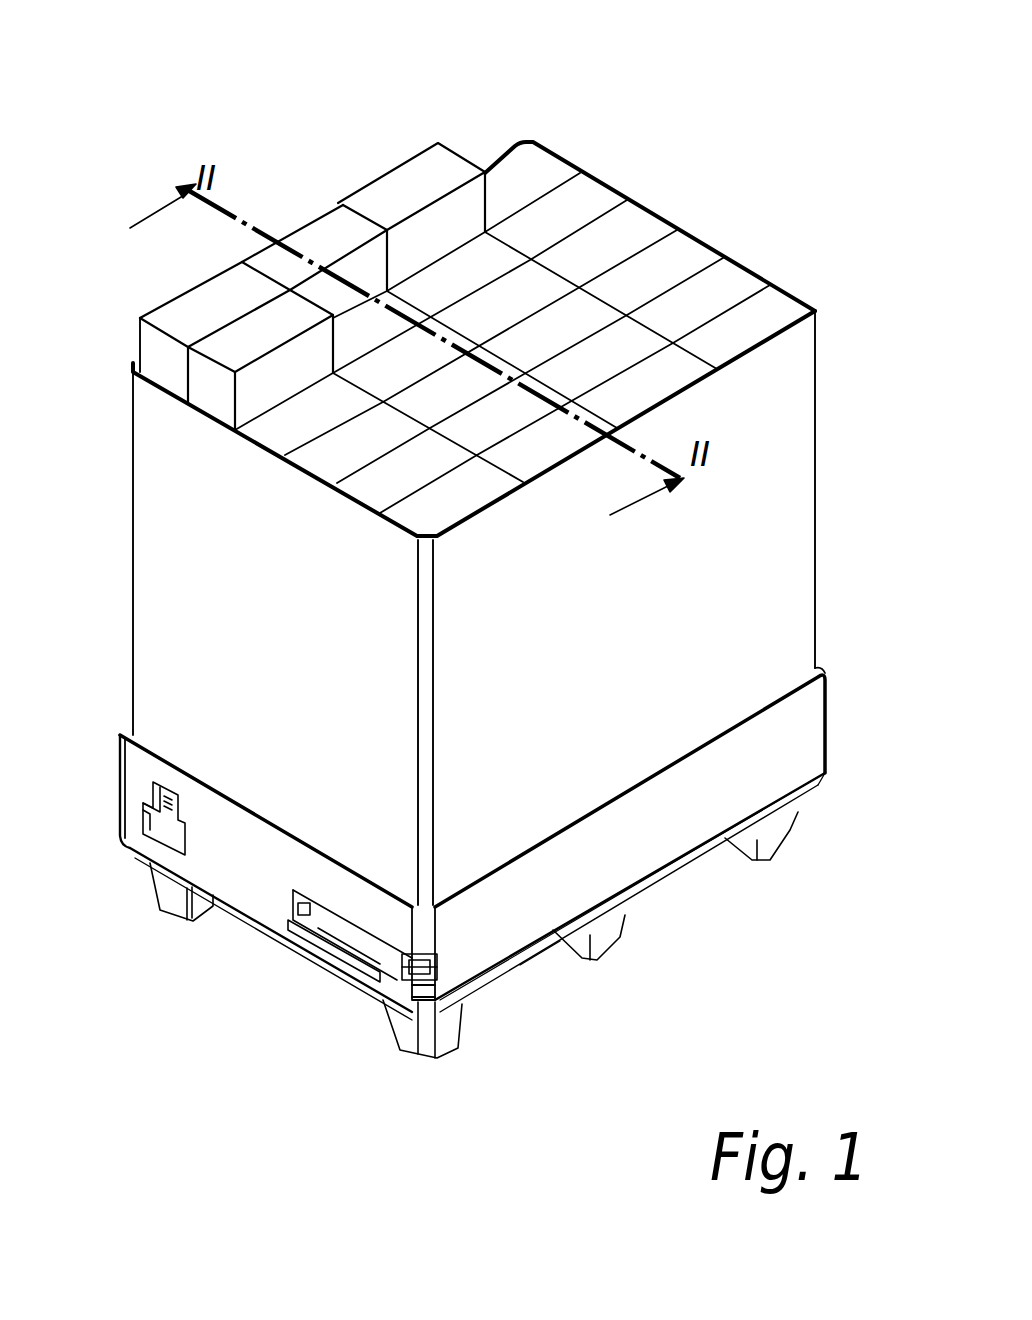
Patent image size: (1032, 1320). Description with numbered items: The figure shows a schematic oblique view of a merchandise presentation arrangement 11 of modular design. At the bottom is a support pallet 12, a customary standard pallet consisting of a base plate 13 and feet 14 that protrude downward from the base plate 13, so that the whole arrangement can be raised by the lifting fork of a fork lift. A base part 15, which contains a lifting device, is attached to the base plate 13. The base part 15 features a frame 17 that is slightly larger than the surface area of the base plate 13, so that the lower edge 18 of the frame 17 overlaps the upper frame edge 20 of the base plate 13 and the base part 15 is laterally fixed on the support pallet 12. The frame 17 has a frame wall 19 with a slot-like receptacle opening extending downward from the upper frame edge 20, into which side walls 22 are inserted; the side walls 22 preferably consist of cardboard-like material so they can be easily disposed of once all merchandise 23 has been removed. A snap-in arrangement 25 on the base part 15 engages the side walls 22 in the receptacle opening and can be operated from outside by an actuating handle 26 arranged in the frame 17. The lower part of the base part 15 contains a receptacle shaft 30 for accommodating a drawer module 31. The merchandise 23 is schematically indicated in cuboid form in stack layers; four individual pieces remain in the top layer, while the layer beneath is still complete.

The merchandise presentation arrangement 11 is at (679, 182).
The support pallet 12 is at (700, 858).
The base plate 13 is at (528, 956).
The feet 14 is at (778, 833).
The base part 15 is at (754, 768).
The frame 17 is at (253, 866).
The lower edge 18 is at (658, 868).
The frame wall 19 is at (622, 878).
The upper frame edge 20 is at (485, 832).
The side walls 22 is at (292, 636).
The merchandise 23 is at (326, 230).
The snap-in arrangement 25 is at (165, 824).
The actuating handle 26 is at (163, 817).
The receptacle shaft 30 is at (337, 935).
The drawer module 31 is at (397, 968).